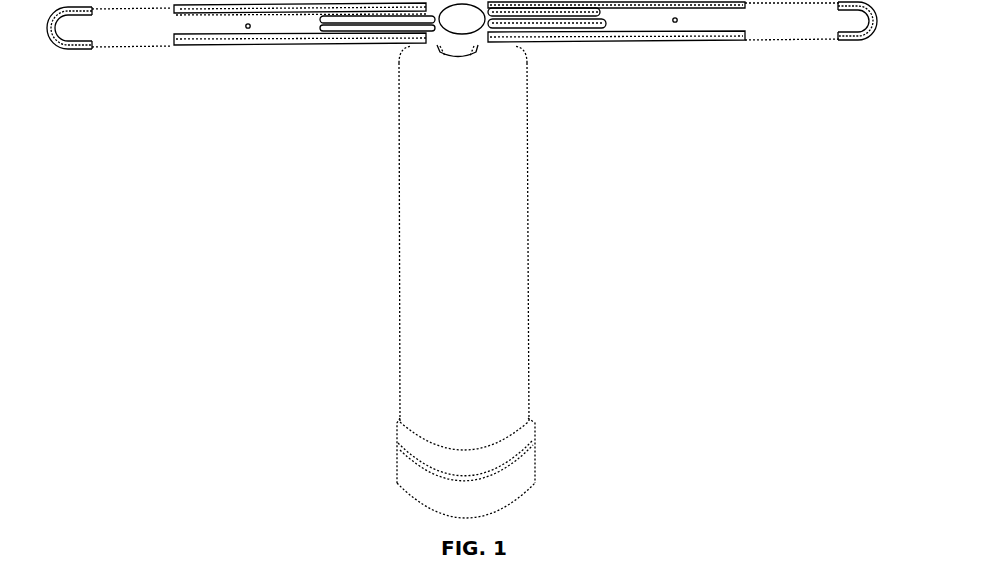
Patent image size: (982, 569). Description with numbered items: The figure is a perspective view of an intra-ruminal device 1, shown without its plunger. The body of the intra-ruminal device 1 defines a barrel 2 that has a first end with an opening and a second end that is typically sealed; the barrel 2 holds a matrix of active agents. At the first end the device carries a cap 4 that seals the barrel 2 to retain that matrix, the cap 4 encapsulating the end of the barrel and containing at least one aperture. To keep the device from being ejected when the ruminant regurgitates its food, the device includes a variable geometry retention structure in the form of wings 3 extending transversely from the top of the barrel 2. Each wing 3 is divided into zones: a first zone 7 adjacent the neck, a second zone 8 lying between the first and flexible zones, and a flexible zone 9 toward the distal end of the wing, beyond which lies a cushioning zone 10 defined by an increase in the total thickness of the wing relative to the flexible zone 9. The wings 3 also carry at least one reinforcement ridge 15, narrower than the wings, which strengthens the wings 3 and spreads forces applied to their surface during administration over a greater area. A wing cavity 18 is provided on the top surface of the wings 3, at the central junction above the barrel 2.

The intra-ruminal device 1 is at (332, 182).
The barrel 2 is at (398, 280).
The wing 3 is at (130, 46).
The cap 4 is at (535, 468).
The first zone 7 is at (540, 36).
The second zone 8 is at (645, 38).
The flexible zone 9 is at (770, 38).
The cushioning zone 10 is at (852, 38).
The reinforcement ridge 15 is at (338, 33).
The wing cavity 18 is at (465, 20).